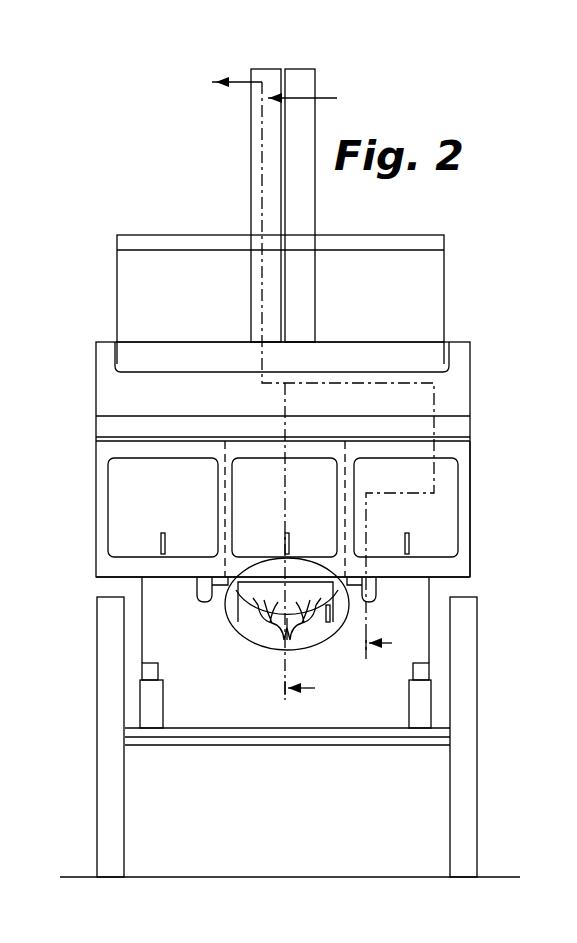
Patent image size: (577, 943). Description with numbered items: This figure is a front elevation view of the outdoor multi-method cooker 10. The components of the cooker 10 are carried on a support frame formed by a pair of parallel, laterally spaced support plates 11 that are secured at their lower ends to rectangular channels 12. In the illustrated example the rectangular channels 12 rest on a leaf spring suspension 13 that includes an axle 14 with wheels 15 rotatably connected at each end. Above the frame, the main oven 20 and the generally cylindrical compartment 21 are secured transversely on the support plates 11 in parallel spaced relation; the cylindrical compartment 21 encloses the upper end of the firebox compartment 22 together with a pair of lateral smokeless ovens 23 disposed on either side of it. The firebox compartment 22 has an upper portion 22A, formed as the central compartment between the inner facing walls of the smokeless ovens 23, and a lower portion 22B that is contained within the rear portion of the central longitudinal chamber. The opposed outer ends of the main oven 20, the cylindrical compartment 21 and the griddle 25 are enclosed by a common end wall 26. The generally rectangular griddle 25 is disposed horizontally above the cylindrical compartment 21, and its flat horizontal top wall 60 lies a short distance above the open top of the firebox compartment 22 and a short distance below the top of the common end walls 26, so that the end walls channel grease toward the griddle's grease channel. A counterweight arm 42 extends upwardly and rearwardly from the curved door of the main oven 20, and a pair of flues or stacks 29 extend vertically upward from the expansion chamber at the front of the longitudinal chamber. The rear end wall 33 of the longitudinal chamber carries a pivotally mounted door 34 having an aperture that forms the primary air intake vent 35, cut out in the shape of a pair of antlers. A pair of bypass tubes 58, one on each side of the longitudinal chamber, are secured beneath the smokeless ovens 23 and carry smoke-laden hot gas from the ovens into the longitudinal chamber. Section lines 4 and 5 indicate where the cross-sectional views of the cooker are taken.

The section line 4- 4 is at (310, 394).
The section line 5- 5 is at (312, 365).
The outdoor multi-method cooker 10 is at (490, 229).
The support plates 11 is at (142, 631).
The rectangular channels 12 is at (159, 668).
The leaf spring suspension 13 is at (163, 713).
The axle 14 is at (274, 748).
The wheels 15 is at (124, 835).
The main oven 20 is at (455, 396).
The generally cylindrical compartment 21 is at (466, 498).
The firebox compartment 22 is at (230, 612).
The upper portion of the firebox compartment 22A is at (296, 517).
The lower portion of the firebox compartment 22B is at (236, 628).
The smokeless ovens 23 is at (176, 517).
The griddle 25 is at (190, 412).
The common end wall 26 is at (471, 450).
The flues or stacks 29 is at (251, 200).
The rear end wall 33 is at (330, 608).
The door 34 is at (270, 632).
The primary air intake vent 35 is at (308, 624).
The counterweight arm 42 is at (119, 300).
The bypass tubes 58 is at (197, 590).
The horizontal top wall 60 is at (248, 418).